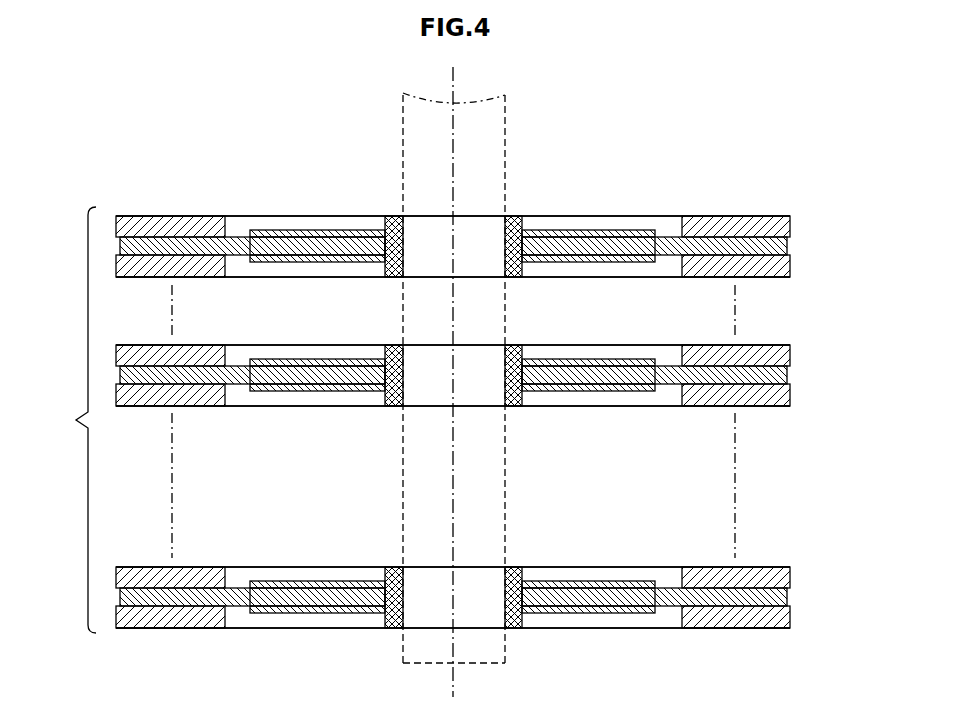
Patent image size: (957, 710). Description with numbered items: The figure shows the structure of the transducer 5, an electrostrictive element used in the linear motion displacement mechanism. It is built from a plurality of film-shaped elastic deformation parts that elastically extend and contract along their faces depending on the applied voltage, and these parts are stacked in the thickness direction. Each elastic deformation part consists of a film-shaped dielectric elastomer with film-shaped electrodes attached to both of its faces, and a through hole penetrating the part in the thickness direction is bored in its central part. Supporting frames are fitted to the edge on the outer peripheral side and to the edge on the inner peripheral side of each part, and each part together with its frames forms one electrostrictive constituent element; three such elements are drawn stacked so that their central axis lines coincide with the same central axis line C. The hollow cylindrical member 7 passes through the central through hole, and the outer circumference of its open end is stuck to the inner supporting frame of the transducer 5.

The transducer 5 is at (72, 420).
The cylindrical member 7 is at (402, 122).
The central axis line C is at (455, 156).